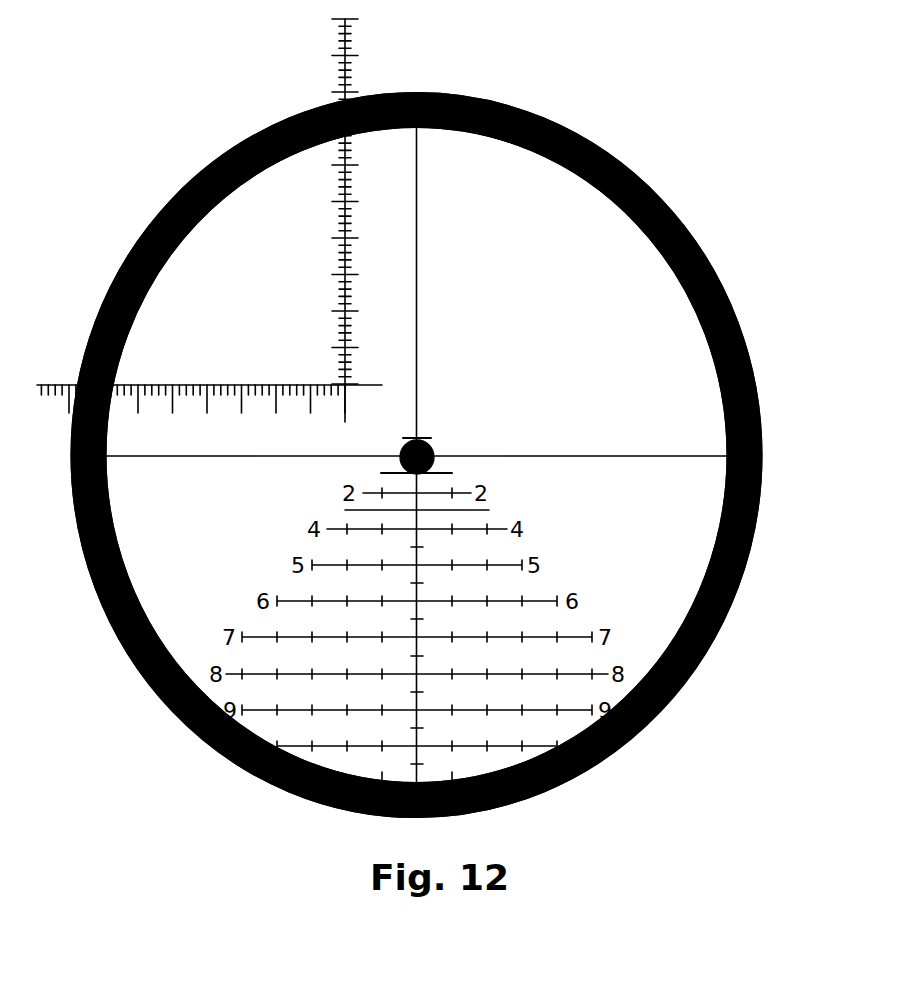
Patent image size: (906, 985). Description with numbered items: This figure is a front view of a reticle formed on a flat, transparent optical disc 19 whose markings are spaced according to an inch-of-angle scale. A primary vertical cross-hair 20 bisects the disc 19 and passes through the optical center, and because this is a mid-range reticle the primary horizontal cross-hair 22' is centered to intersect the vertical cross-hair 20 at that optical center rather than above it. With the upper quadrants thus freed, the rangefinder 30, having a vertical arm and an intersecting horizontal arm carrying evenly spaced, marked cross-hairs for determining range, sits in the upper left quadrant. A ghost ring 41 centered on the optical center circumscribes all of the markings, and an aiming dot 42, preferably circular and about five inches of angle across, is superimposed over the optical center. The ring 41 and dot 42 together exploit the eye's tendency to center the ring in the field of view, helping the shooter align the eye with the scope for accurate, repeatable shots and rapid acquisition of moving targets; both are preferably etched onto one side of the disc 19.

The disc 19 is at (160, 567).
The primary vertical cross-hair 20 is at (418, 207).
The primary horizontal cross-hair 22' is at (417, 484).
The rangefinder 30 is at (209, 226).
The ghost ring 41 is at (670, 207).
The aiming dot 42 is at (432, 445).